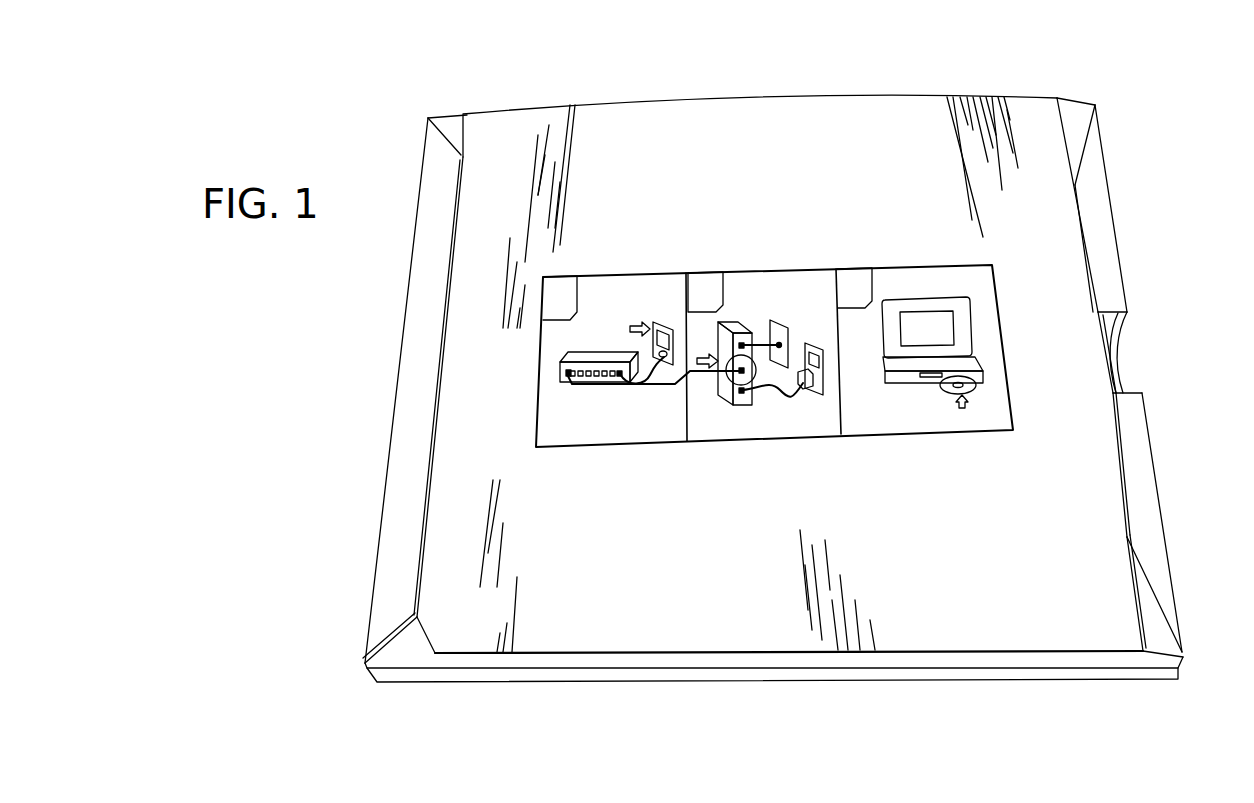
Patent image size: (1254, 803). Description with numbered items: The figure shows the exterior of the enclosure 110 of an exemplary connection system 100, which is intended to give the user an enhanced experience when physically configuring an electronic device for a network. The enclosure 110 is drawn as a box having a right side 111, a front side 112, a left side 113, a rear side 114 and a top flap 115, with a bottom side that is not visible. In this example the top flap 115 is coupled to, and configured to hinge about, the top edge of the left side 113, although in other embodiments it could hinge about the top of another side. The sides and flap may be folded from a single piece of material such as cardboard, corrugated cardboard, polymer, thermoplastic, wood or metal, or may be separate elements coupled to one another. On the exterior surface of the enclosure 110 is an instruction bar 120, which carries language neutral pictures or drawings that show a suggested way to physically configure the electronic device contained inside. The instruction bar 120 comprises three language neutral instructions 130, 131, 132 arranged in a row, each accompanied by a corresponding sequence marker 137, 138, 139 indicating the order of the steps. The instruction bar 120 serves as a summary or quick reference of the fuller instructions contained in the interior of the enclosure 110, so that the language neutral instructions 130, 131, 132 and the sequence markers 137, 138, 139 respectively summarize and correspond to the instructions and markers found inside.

The connection system 100 is at (284, 90).
The enclosure 110 is at (755, 377).
The right side 111 is at (1143, 437).
The front side 112 is at (780, 670).
The left side 113 is at (384, 494).
The rear side 114 is at (801, 93).
The top flap 115 is at (1032, 225).
The instruction bar 120 is at (870, 432).
The language neutral instruction 130 is at (642, 360).
The language neutral instruction 131 is at (755, 353).
The language neutral instruction 132 is at (934, 348).
The sequence marker 137 is at (573, 276).
The sequence marker 138 is at (718, 275).
The sequence marker 139 is at (865, 272).